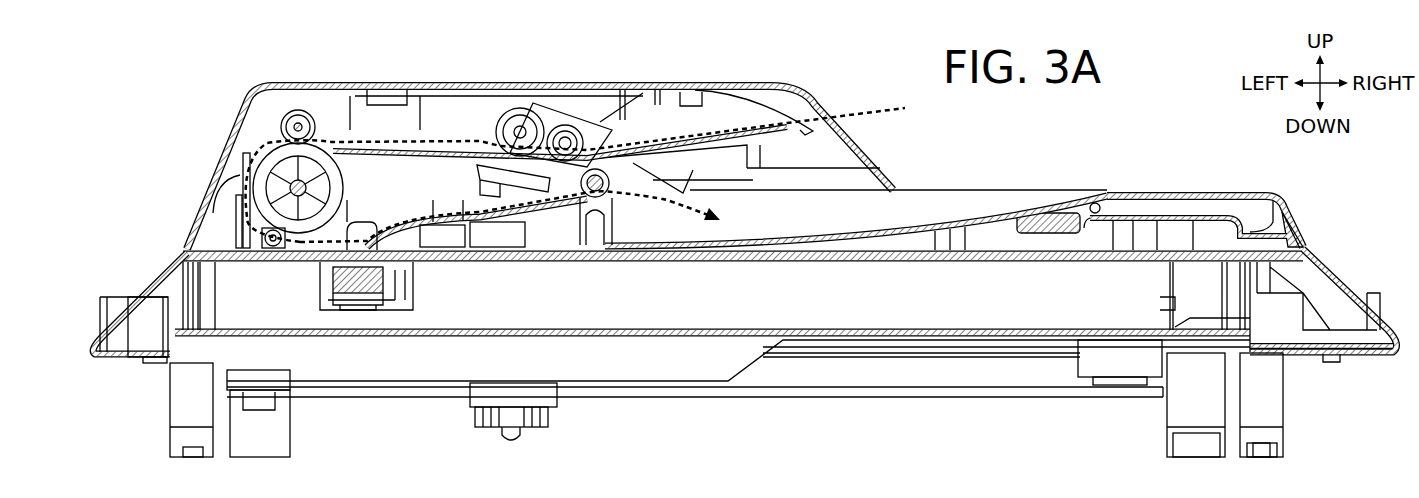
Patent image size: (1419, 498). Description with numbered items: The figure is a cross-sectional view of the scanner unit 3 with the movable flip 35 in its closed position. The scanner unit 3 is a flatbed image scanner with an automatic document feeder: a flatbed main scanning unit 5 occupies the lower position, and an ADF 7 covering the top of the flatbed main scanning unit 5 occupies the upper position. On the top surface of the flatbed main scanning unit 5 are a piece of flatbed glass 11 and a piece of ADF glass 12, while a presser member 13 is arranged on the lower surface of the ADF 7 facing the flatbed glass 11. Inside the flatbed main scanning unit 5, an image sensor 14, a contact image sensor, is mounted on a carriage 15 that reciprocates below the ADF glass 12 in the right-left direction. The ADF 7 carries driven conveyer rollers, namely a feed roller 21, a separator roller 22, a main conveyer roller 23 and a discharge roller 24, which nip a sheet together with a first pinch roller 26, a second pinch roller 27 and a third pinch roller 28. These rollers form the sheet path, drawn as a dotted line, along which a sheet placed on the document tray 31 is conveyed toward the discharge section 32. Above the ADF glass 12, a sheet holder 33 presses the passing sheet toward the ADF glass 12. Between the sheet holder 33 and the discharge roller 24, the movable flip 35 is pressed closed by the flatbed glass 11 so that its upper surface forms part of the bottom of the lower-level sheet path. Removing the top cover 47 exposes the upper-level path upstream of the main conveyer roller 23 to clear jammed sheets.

The scanner unit 3 is at (1117, 141).
The flatbed main scanning unit 5 is at (1337, 268).
The ADF 7 is at (1270, 192).
The flatbed glass 11 is at (672, 263).
The ADF glass 12 is at (293, 263).
The presser member 13 is at (771, 263).
The image sensor 14 is at (383, 305).
The carriage 15 is at (413, 286).
The feed roller 21 is at (560, 122).
The separator roller 22 is at (510, 107).
The main conveyer roller 23 is at (337, 163).
The discharge roller 24 is at (630, 138).
The first pinch roller 26 is at (302, 108).
The second pinch roller 27 is at (240, 232).
The third pinch roller 28 is at (608, 198).
The document tray 31 is at (737, 130).
The discharge section 32 is at (947, 222).
The sheet holder 33 is at (363, 233).
The movable flip 35 is at (495, 262).
The top cover 47 is at (292, 82).